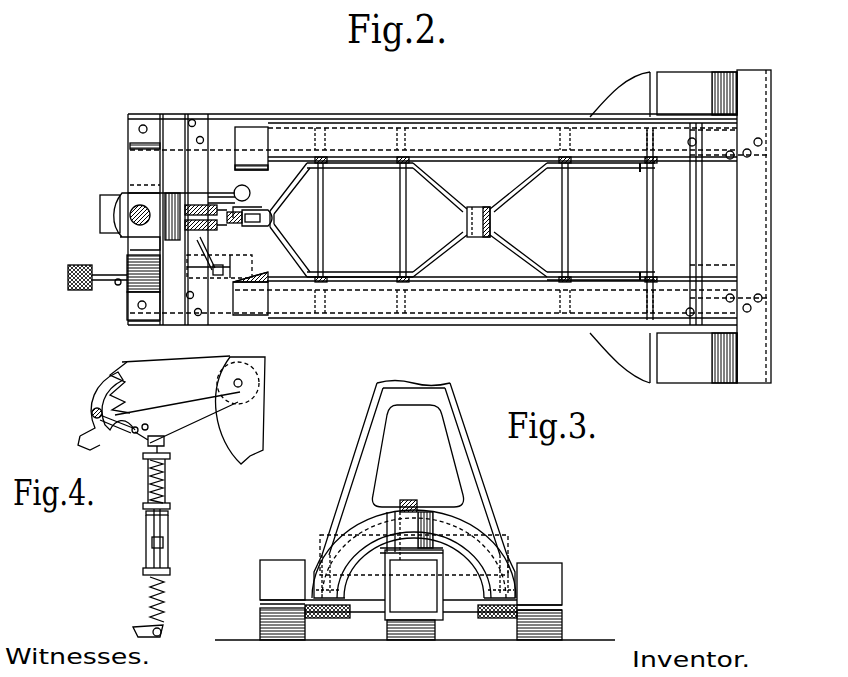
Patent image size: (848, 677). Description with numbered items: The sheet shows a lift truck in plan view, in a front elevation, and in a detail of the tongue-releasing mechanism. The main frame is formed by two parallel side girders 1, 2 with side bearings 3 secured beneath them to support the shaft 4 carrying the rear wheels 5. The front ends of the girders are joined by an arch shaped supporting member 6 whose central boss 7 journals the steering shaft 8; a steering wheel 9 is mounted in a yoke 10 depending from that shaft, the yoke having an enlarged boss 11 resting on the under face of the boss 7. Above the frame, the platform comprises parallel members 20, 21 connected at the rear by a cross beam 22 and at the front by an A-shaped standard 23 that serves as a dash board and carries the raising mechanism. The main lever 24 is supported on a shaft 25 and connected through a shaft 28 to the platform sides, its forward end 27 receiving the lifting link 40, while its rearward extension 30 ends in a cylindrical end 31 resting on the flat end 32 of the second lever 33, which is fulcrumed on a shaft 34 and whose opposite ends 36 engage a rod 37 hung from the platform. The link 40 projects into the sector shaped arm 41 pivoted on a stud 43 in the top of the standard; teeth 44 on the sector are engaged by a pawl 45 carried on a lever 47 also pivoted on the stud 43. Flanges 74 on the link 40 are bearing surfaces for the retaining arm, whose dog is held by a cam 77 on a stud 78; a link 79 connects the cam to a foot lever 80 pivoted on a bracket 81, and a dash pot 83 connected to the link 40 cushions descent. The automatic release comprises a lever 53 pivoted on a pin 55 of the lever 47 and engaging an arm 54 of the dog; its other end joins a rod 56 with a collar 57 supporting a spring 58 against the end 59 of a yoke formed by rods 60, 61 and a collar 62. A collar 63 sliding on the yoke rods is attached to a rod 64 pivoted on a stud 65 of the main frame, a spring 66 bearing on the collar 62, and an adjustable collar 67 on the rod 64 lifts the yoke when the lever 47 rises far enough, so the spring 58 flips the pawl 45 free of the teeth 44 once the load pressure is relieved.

In FIG. 2, the side member or girder 1 is at (522, 322).
In FIG. 3, the side member or girder 1 is at (520, 580).
In FIG. 2, the side member or girder 2 is at (520, 118).
In FIG. 3, the side member or girder 2 is at (312, 560).
In FIG. 2, the side bearing 3 is at (672, 113).
In FIG. 3, the side bearing 3 is at (330, 622).
In FIG. 2, the shaft 4 is at (703, 220).
In FIG. 2, the rear wheel 5 is at (690, 80).
In FIG. 3, the rear wheel 5 is at (278, 562).
In FIG. 2, the arch shaped supporting member 6 is at (135, 164).
In FIG. 3, the arch shaped supporting member 6 is at (490, 535).
In FIG. 3, the boss 7 is at (433, 530).
In FIG. 2, the shaft or steering post 8 is at (130, 216).
In FIG. 3, the shaft or steering post 8 is at (410, 500).
In FIG. 2, the steering wheel 9 is at (100, 234).
In FIG. 3, the steering wheel 9 is at (387, 631).
In FIG. 3, the yoke 10 is at (444, 582).
In FIG. 3, the enlarged portion or boss 11 is at (392, 550).
In FIG. 2, the platform member 20 is at (445, 128).
In FIG. 3, the platform member 20 is at (330, 530).
In FIG. 2, the platform member 21 is at (472, 306).
In FIG. 3, the platform member 21 is at (506, 545).
In FIG. 2, the cross beam 22 is at (766, 218).
In FIG. 2, the A-shaped standard 23 is at (256, 125).
In FIG. 3, the A-shaped standard 23 is at (470, 466).
In FIG. 4, the A-shaped standard 23 is at (262, 430).
In FIG. 2, the main lever 24 is at (366, 168).
In FIG. 2, the shaft 25 is at (400, 216).
In FIG. 2, the forward end 27 is at (252, 206).
In FIG. 2, the shaft 28 is at (324, 226).
In FIG. 2, the rearward extension 30 is at (471, 232).
In FIG. 2, the cylindrical end 31 is at (480, 206).
In FIG. 2, the end 32 is at (494, 208).
In FIG. 2, the second lever 33 is at (598, 170).
In FIG. 2, the shaft 34 is at (569, 243).
In FIG. 2, the opposite end 36 is at (634, 180).
In FIG. 2, the shaft or rod 37 is at (653, 236).
In FIG. 2, the link 40 is at (240, 232).
In FIG. 2, the sector shaped arm 41 is at (196, 219).
In FIG. 4, the sector shaped arm 41 is at (182, 362).
In FIG. 4, the stud 43 is at (243, 385).
In FIG. 4, the teeth or notches 44 is at (122, 362).
In FIG. 4, the pawl 45 is at (95, 385).
In FIG. 4, the lever 47 is at (88, 443).
In FIG. 4, the lever 53 is at (138, 427).
In FIG. 4, the arm 54 is at (125, 415).
In FIG. 4, the pin 55 is at (140, 440).
In FIG. 4, the rod 56 is at (178, 441).
In FIG. 4, the collar 57 is at (170, 506).
In FIG. 4, the spring 58 is at (165, 480).
In FIG. 4, the end of yoke 59 is at (170, 456).
In FIG. 4, the yoke rod 60 is at (146, 525).
In FIG. 4, the yoke rod 61 is at (169, 528).
In FIG. 4, the collar 62 is at (170, 571).
In FIG. 4, the collar 63 is at (168, 513).
In FIG. 4, the rod 64 is at (154, 562).
In FIG. 4, the stud 65 is at (165, 628).
In FIG. 4, the spring 66 is at (165, 598).
In FIG. 4, the adjustable collar 67 is at (148, 426).
In FIG. 2, the flange 74 is at (268, 218).
In FIG. 2, the cam 77 is at (206, 218).
In FIG. 2, the stud 78 is at (195, 208).
In FIG. 2, the link 79 is at (200, 246).
In FIG. 2, the foot lever 80 is at (100, 284).
In FIG. 2, the bracket 81 is at (222, 258).
In FIG. 2, the dash pot 83 is at (238, 186).